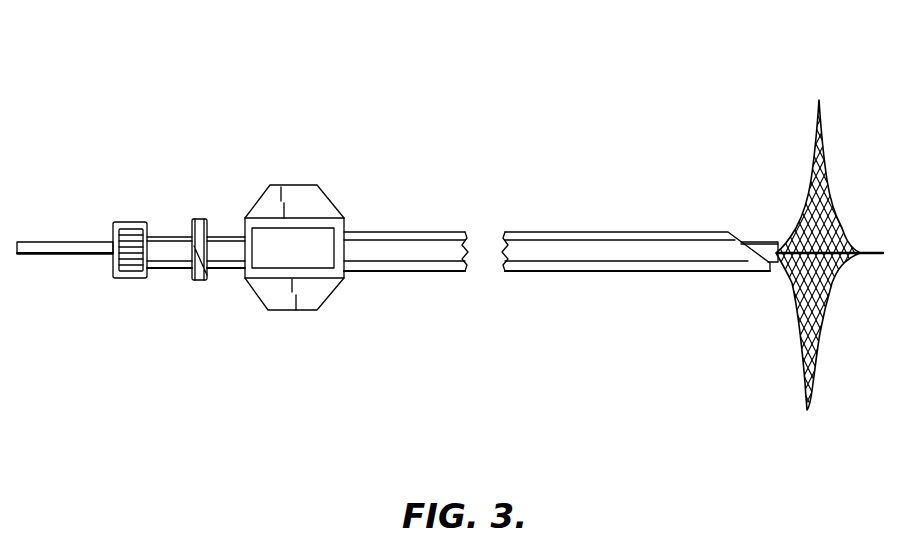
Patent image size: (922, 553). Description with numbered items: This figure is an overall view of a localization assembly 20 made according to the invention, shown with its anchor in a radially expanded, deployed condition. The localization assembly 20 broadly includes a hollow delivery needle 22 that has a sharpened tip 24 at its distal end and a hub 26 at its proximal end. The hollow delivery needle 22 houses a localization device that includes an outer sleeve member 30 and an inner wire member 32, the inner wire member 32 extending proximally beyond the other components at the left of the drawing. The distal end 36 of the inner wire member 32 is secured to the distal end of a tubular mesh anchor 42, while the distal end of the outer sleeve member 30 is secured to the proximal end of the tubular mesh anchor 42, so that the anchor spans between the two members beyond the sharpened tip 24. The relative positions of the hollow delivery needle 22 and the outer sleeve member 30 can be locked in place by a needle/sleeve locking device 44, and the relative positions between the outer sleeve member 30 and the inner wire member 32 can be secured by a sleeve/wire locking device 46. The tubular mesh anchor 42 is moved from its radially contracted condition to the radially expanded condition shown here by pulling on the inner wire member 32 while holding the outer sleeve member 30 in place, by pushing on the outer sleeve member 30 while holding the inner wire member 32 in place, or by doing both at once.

The localization assembly 20 is at (272, 70).
The hollow delivery needle 22 is at (218, 270).
The sharpened tip 24 is at (732, 264).
The hub 26 is at (302, 176).
The outer sleeve member 30 is at (165, 236).
The inner wire member 32 is at (39, 255).
The distal end of inner wire member 36 is at (882, 258).
The tubular mesh anchor 42 is at (812, 172).
The needle/sleeve locking device 44 is at (203, 219).
The sleeve/wire locking device 46 is at (128, 279).